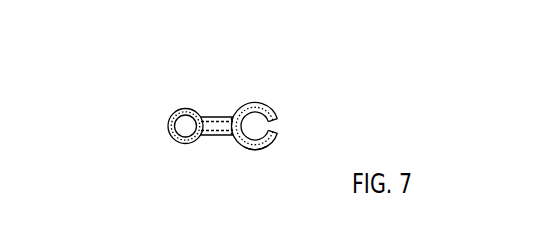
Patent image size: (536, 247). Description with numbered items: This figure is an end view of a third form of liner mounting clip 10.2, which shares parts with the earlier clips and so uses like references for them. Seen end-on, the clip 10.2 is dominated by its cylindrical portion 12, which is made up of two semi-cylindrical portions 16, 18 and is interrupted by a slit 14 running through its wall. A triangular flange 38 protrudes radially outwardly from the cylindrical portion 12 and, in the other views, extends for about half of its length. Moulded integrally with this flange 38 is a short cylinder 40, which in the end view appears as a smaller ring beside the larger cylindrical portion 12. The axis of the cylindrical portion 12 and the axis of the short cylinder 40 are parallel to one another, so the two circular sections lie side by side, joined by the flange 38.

The cylindrical portion 12 is at (208, 124).
The short cylinder 40 is at (168, 122).
The triangular flange 38 is at (198, 124).
The clip 10.2 is at (225, 138).
The semi-cylindrical portion 16 is at (275, 147).
The slit 14 is at (279, 126).
The semi-cylindrical portion 18 is at (253, 151).